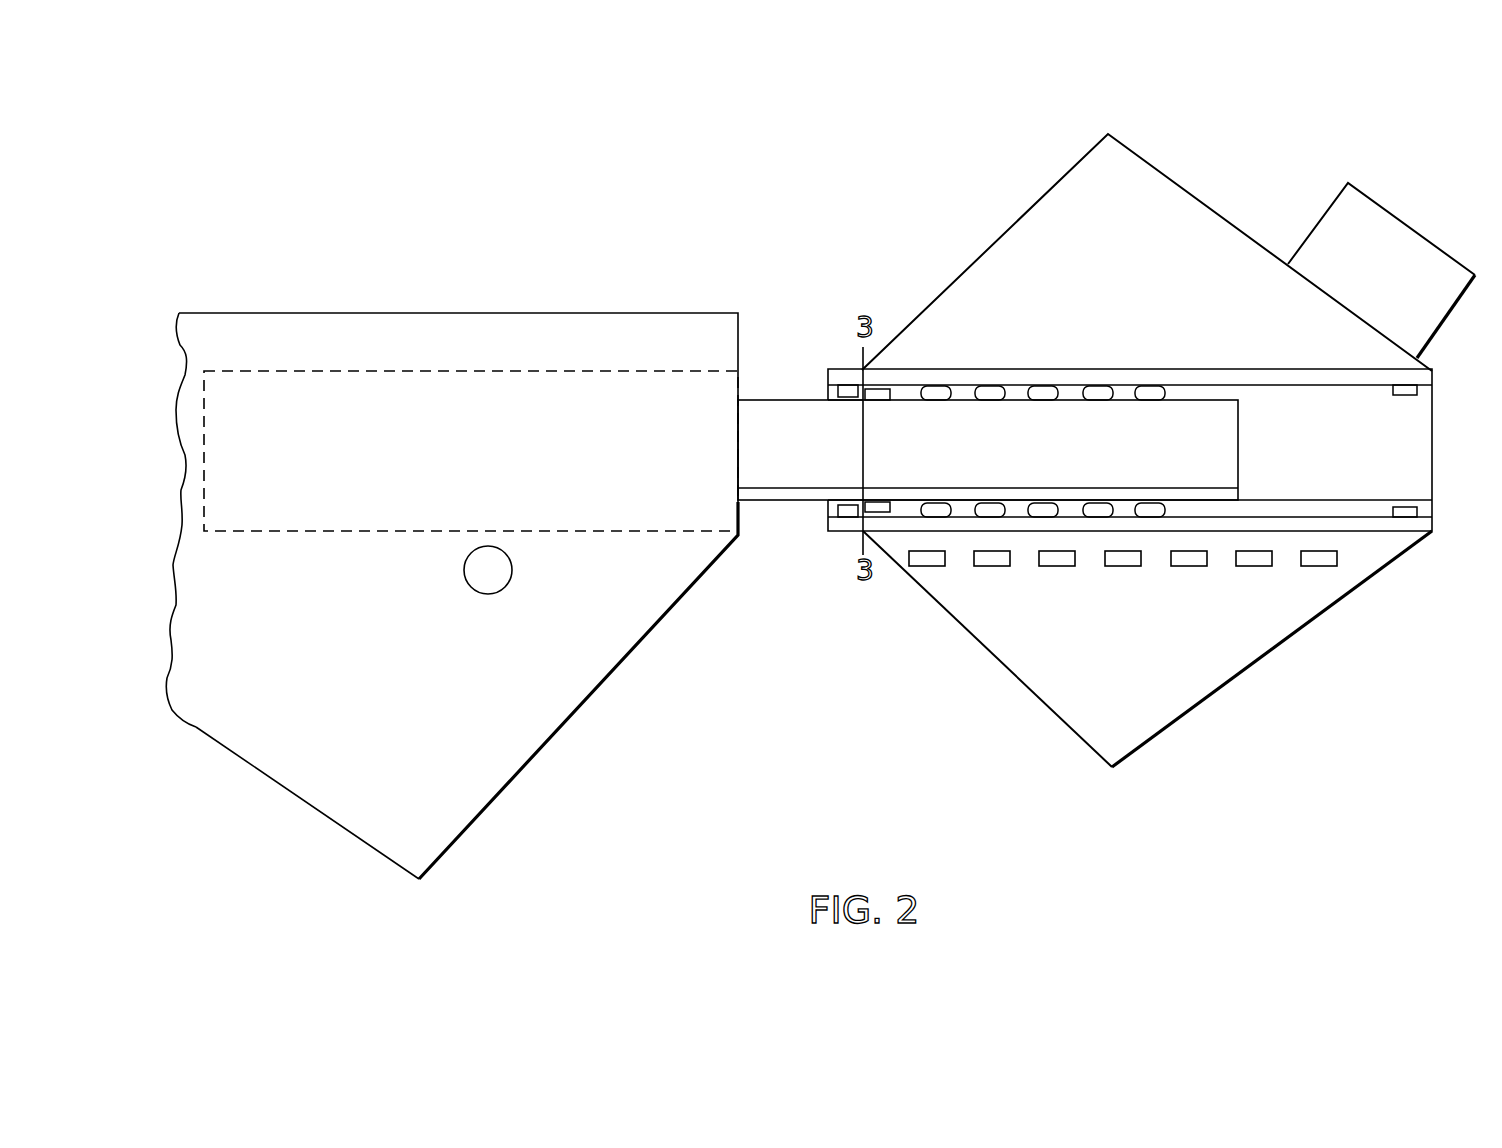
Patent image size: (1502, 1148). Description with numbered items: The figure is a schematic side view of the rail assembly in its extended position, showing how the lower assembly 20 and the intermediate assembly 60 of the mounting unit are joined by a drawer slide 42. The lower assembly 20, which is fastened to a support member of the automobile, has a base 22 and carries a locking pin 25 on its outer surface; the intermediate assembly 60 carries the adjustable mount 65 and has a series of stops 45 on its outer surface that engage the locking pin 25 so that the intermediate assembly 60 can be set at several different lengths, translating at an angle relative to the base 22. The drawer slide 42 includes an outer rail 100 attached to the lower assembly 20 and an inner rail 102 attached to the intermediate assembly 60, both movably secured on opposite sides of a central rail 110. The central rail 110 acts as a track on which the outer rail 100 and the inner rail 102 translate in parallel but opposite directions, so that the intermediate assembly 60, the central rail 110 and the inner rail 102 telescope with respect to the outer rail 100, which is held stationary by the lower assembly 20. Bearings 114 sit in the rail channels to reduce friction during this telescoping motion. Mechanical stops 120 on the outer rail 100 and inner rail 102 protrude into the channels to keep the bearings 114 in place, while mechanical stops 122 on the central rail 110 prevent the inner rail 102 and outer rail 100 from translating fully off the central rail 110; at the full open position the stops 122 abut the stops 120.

The lower assembly 20 is at (517, 733).
The base 22 is at (282, 789).
The locking pin 25 is at (486, 582).
The drawer slide 42 is at (787, 300).
The stops 45 is at (1193, 566).
The intermediate assembly 60 is at (1057, 207).
The adjustable mount 65 is at (1347, 225).
The outer rail 100 is at (593, 538).
The inner rail 102 is at (1270, 388).
The central rail 110 is at (819, 596).
The bearings 114 is at (990, 388).
The mechanical stops 120 is at (840, 388).
The mechanical stops 122 is at (880, 388).